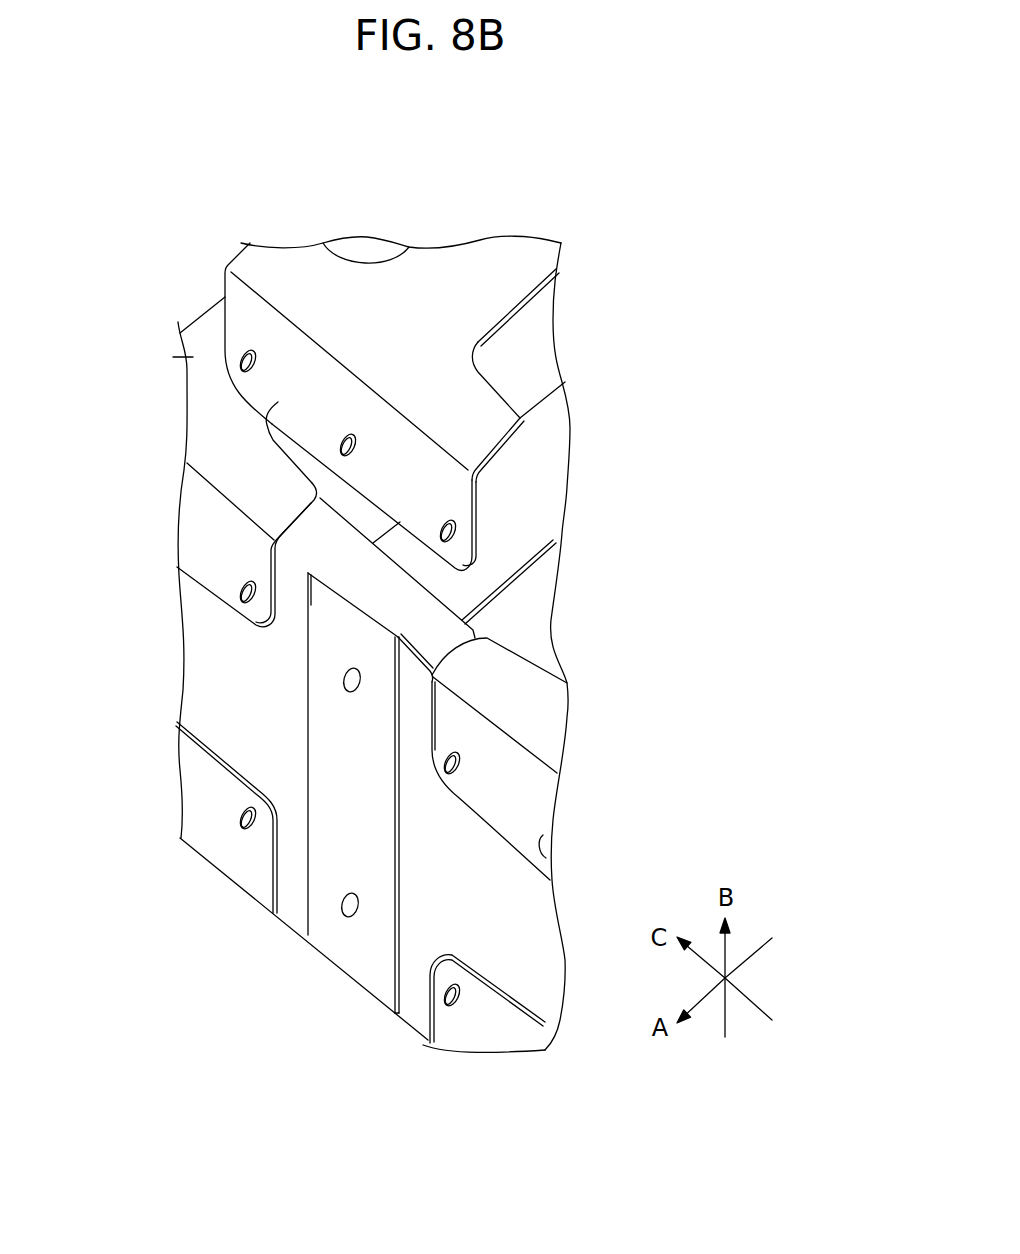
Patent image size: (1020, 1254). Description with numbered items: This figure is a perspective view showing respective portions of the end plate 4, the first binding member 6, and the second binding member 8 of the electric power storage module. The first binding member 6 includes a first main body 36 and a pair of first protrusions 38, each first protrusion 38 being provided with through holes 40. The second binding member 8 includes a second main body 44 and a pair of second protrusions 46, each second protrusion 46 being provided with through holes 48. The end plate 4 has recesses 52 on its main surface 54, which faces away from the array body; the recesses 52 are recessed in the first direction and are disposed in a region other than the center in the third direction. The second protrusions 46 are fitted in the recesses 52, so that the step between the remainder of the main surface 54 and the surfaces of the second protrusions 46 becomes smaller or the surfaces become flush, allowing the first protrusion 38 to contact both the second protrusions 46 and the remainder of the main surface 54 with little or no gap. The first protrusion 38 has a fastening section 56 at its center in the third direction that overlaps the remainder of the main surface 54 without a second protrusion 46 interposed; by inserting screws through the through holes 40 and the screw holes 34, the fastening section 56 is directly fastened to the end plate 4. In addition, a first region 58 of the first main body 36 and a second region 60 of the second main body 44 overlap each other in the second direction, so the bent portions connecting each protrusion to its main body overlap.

The end plate 4 is at (305, 953).
The first binding member 6 is at (515, 390).
The second binding member 8 is at (168, 393).
The screw hole 34 is at (347, 925).
The first main body 36 is at (497, 297).
The first protrusion 38 is at (223, 320).
The through hole 40 is at (452, 521).
The second main body 44 is at (188, 357).
The second protrusion 46 is at (198, 532).
The through hole 48 is at (243, 600).
The recess 52 is at (202, 687).
The main surface 54 is at (378, 895).
The fastening section 56 is at (400, 480).
The first region 58 is at (283, 260).
The second region 60 is at (279, 497).